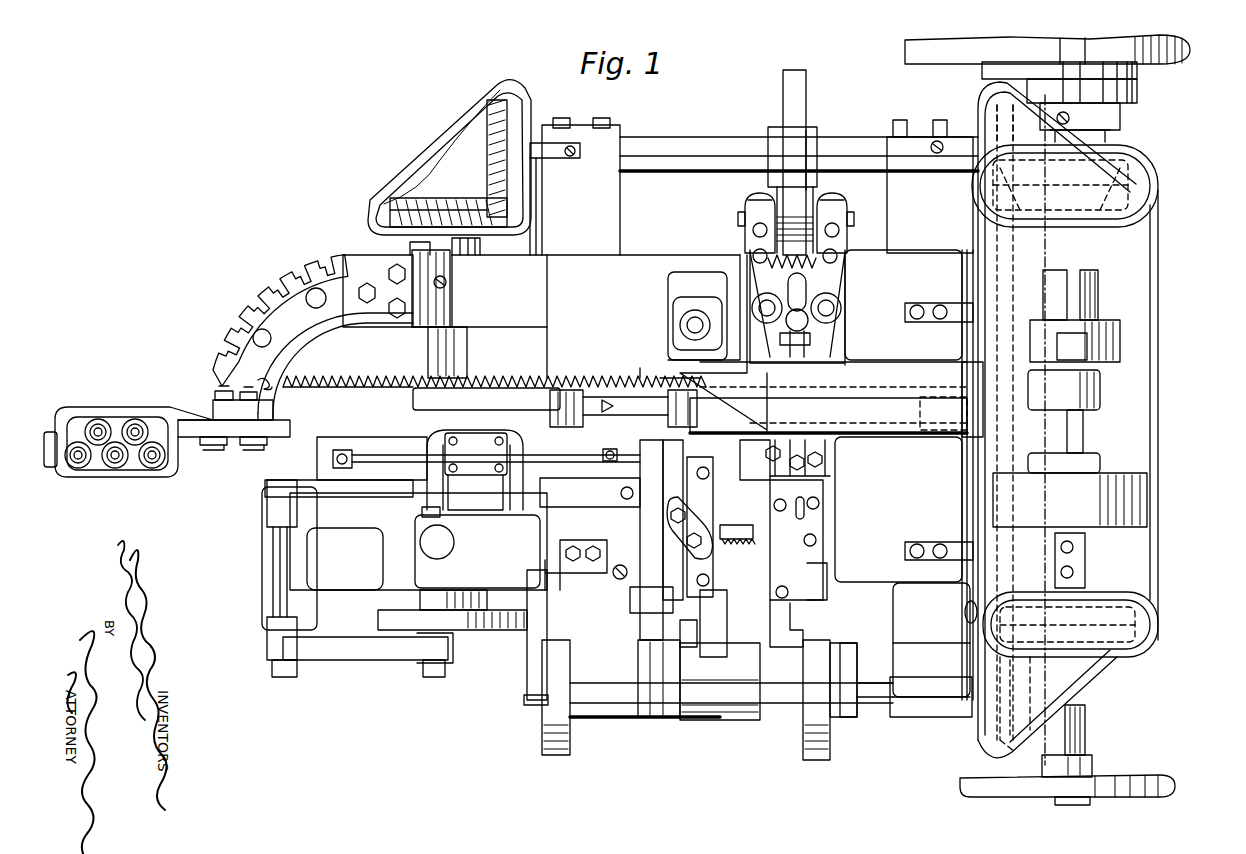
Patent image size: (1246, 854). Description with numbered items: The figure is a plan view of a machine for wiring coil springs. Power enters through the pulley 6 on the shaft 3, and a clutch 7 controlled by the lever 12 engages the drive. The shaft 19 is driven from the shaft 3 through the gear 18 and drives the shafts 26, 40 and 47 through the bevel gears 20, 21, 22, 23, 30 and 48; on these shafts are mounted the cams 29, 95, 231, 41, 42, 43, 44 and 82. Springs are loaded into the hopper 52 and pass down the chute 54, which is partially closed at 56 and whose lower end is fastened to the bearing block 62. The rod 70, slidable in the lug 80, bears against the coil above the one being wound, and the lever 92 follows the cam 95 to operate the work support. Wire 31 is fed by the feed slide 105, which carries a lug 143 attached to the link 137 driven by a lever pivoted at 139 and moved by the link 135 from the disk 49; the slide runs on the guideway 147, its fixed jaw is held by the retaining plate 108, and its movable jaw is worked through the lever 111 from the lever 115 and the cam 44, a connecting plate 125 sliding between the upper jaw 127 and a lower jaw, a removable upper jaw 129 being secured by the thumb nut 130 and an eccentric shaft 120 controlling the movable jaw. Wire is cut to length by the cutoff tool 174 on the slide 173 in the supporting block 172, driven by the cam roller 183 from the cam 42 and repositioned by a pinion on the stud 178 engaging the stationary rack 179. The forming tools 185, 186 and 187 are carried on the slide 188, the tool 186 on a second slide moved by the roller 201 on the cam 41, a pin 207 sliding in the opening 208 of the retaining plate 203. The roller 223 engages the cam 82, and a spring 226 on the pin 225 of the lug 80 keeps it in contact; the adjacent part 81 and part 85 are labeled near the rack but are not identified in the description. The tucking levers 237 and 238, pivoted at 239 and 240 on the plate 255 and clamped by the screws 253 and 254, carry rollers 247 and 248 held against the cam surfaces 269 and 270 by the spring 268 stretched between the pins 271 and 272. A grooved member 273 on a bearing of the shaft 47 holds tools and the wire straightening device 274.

The shaft 3 is at (1080, 716).
The pulley 6 is at (906, 50).
The clutch 7 is at (1137, 92).
The lever 12 is at (968, 612).
The gear 18 is at (1094, 462).
The shaft 19 is at (1078, 441).
The bevel gear 20 is at (1142, 652).
The bevel gear 21 is at (1152, 185).
The bevel gear 22 is at (985, 745).
The bevel gear 23 is at (1000, 102).
The shaft 26 is at (865, 145).
The cam 29 is at (784, 108).
The bevel gear 30 is at (512, 92).
The wire 31 is at (311, 428).
The shaft 40 is at (880, 690).
The cam 41 is at (822, 760).
The cam 42 is at (748, 720).
The cam 43 is at (673, 718).
The cam 44 is at (558, 755).
The shaft 47 is at (430, 348).
The bevel gear 48 is at (378, 215).
The disk 49 is at (480, 628).
The hopper 52 is at (1158, 207).
The chute 54 is at (935, 425).
The partially closed portion of chute 56 is at (895, 370).
The bearing block 62 is at (775, 405).
The rod 70 is at (665, 408).
The lug 80 is at (683, 373).
The rack end 81 is at (637, 398).
The cam 82 is at (520, 400).
The pointer 85 is at (607, 408).
The lever 92 is at (1010, 340).
The cam 95 is at (1092, 352).
The feed slide 105 is at (437, 435).
The retaining plate 108 is at (476, 454).
The lever 111 is at (475, 492).
The lever 115 is at (528, 684).
The shaft 120 is at (580, 575).
The connecting plate 125 is at (462, 512).
The upper jaw 127 is at (525, 500).
The upper jaw 129 is at (422, 513).
The thumb nut 130 is at (452, 546).
The link 135 is at (360, 650).
The link 137 is at (300, 480).
The pivot 139 is at (270, 600).
The lug 143 is at (408, 460).
The guideway 147 is at (318, 452).
The supporting block 172 is at (700, 492).
The slide 173 is at (720, 615).
The cutoff tool 174 is at (710, 475).
The stud 178 is at (700, 545).
The stationary rack 179 is at (735, 513).
The cam roller 183 is at (700, 640).
The forming tool 185 is at (760, 450).
The forming tool 186 is at (820, 452).
The forming tool 187 is at (830, 463).
The slide 188 is at (776, 618).
The roller 201 is at (820, 570).
The retaining plate 203 is at (818, 530).
The pin 207 is at (815, 505).
The opening 208 is at (815, 515).
The roller 223 is at (578, 405).
The pin 225 is at (668, 377).
The spring 226 is at (653, 383).
The cam 231 is at (1094, 405).
The lever 237 is at (752, 240).
The lever 238 is at (843, 236).
The pivot 239 is at (753, 292).
The pivot 240 is at (842, 302).
The roller 247 is at (748, 198).
The roller 248 is at (838, 198).
The clamp screw 253 is at (744, 222).
The clamp screw 254 is at (848, 222).
The plate 255 is at (840, 340).
The spring 268 is at (840, 272).
The cam surface 269 is at (775, 150).
The cam surface 270 is at (812, 130).
The pin 271 is at (760, 255).
The pin 272 is at (835, 258).
The grooved member 273 is at (262, 305).
The wire straightening device 274 is at (168, 410).